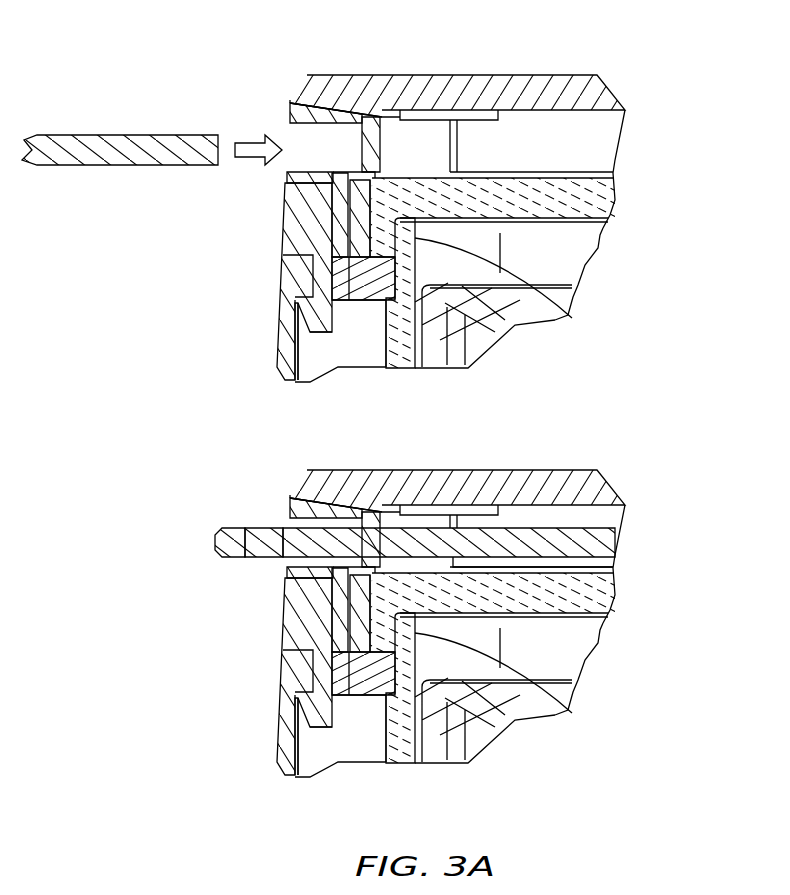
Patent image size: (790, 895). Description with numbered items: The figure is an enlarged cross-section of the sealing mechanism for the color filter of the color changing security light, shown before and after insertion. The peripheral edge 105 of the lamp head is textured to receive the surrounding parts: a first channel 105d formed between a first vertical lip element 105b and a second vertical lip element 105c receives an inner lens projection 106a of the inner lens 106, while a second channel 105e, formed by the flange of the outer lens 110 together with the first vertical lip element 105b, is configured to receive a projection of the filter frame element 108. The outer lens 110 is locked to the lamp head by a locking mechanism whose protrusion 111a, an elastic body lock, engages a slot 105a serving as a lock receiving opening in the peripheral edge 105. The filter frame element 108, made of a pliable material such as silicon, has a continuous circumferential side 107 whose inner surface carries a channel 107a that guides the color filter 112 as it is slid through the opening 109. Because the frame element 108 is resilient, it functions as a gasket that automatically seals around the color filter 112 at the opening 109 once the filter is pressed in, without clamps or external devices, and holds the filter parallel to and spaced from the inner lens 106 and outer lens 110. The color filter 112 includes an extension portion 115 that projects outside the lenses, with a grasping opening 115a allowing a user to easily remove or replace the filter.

The peripheral edge 105 is at (282, 352).
The slot 105a is at (321, 356).
The first vertical lip element 105b is at (356, 248).
The second vertical lip element 105c is at (415, 250).
The first channel 105d is at (450, 366).
The second channel 105e is at (343, 228).
The inner lens 106 is at (616, 202).
The inner lens projection 106a is at (570, 300).
The continuous circumferential side 107 is at (305, 103).
The channel 107a is at (352, 185).
The filter frame element 108 is at (272, 189).
The opening 109 is at (346, 142).
The outer lens 110 is at (538, 88).
The protrusion 111a is at (298, 322).
The color filter 112 is at (122, 150).
The extension portion 115 is at (220, 547).
The grasping opening 115a is at (263, 538).